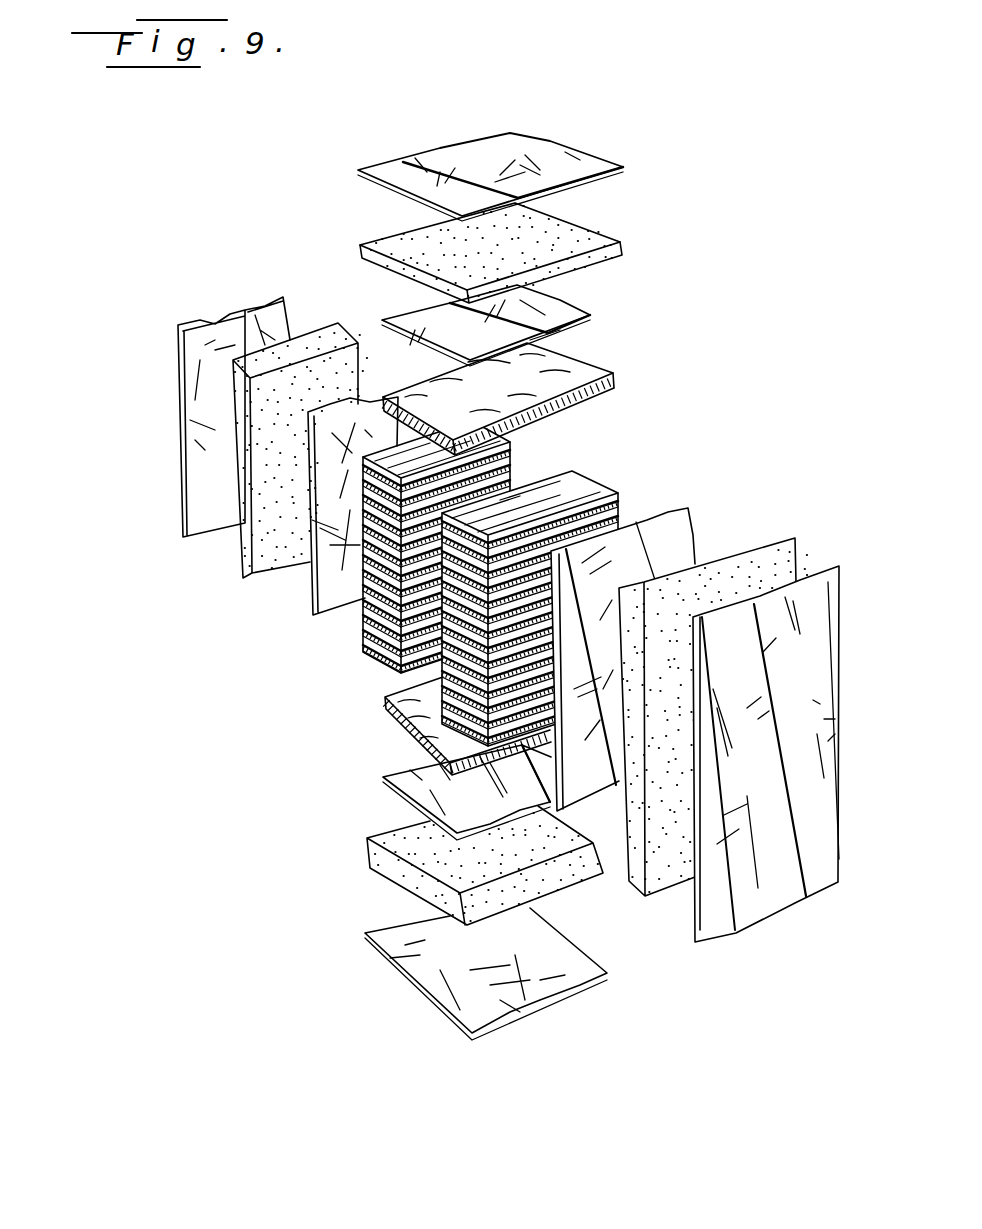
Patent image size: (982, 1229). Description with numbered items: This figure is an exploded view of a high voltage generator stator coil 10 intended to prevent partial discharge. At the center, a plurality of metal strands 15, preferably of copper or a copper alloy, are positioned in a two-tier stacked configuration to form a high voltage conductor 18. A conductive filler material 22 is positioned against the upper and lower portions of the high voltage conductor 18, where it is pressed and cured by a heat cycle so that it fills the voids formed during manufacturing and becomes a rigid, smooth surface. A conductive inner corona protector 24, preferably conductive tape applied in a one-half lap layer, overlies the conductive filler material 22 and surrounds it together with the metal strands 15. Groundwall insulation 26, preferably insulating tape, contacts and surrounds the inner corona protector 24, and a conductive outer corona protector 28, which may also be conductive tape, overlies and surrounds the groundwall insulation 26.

The high voltage generator stator coil 10 is at (340, 716).
The metal strands 15 is at (603, 475).
The high voltage conductor 18 is at (583, 461).
The conductive filler material 22 is at (615, 380).
The conductive inner corona protector 24 is at (590, 318).
The groundwall insulation 26 is at (622, 242).
The conductive outer corona protector 28 is at (623, 167).